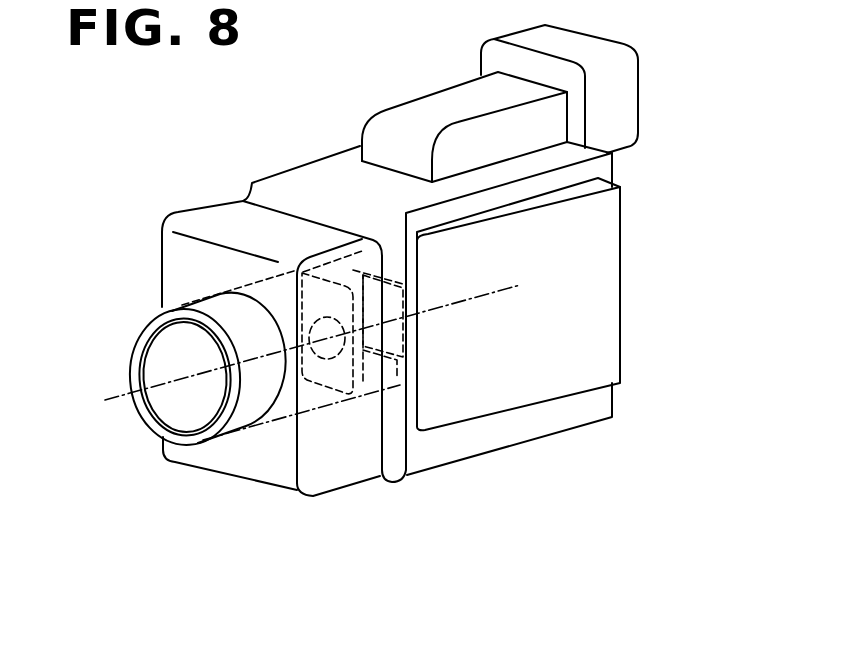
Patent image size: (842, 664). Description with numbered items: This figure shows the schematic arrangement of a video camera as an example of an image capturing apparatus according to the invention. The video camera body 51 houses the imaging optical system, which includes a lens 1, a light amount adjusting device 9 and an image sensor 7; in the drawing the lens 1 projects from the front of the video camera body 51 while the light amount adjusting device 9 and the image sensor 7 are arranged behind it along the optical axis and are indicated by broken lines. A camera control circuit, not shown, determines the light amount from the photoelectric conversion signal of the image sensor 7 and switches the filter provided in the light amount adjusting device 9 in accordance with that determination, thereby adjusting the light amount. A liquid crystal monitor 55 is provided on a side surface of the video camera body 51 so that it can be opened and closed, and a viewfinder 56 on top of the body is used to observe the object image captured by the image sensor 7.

The lens 1 is at (163, 333).
The image sensor 7 is at (420, 293).
The light amount adjusting device 9 is at (333, 392).
The video camera body 51 is at (559, 428).
The liquid crystal monitor 55 is at (611, 350).
The viewfinder 56 is at (630, 70).